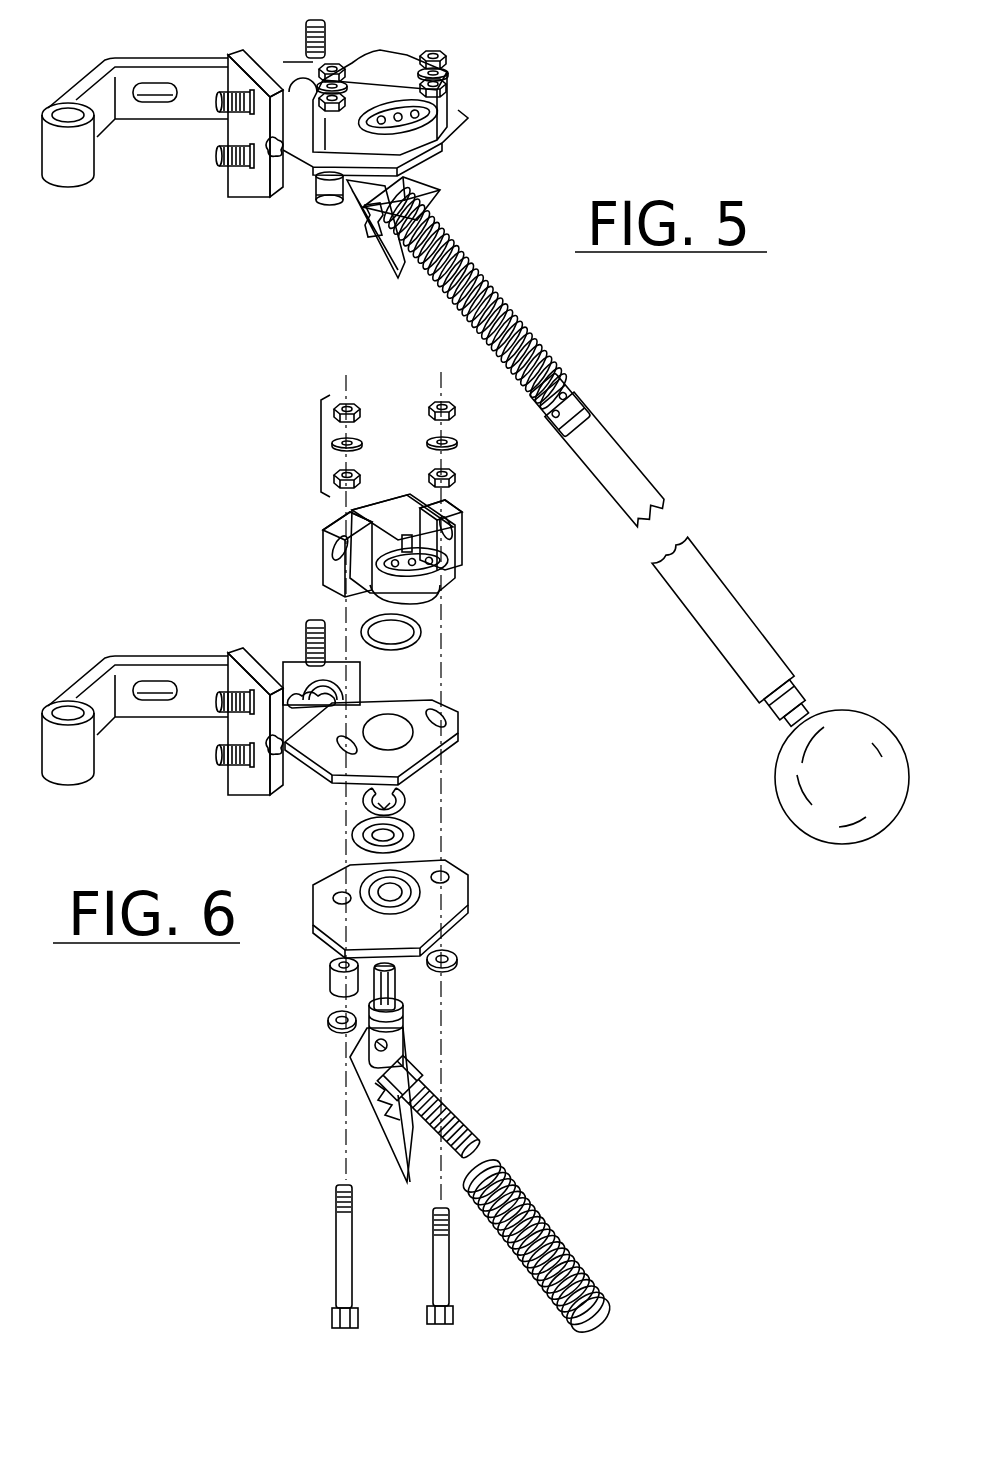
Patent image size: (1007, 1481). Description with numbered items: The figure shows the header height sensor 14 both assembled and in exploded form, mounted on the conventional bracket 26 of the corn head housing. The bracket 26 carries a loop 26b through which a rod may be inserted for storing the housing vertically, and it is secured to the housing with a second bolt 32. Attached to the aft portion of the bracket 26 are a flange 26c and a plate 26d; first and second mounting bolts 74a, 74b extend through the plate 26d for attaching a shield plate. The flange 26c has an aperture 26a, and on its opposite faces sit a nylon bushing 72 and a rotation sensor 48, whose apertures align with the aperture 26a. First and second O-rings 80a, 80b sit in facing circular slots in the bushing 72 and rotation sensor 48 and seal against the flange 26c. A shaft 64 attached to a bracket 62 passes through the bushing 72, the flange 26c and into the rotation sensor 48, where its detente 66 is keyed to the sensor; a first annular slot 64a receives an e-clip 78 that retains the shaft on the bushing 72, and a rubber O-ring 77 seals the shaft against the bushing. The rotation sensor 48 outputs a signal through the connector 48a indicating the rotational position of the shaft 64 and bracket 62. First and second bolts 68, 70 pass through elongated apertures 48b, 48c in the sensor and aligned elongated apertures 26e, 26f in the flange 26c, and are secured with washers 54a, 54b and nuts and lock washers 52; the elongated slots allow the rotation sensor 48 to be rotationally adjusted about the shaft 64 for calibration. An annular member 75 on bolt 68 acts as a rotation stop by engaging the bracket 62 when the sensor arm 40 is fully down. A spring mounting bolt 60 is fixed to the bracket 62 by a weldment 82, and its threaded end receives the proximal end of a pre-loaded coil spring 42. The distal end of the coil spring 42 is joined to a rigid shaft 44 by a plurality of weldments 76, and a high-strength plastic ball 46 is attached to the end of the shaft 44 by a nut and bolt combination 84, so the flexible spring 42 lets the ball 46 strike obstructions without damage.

In FIG. 5, the height sensor 14 is at (246, 282).
In FIG. 6, the height sensor 14 is at (143, 576).
In FIG. 5, the bracket 26 is at (103, 54).
In FIG. 6, the bracket 26 is at (138, 667).
In FIG. 6, the aperture 26a is at (397, 717).
In FIG. 5, the loop 26b is at (106, 128).
In FIG. 6, the loop 26b is at (68, 709).
In FIG. 5, the flange 26c is at (430, 150).
In FIG. 6, the flange 26c is at (433, 768).
In FIG. 5, the plate 26d is at (270, 190).
In FIG. 6, the plate 26d is at (224, 753).
In FIG. 6, the aperture 26e is at (333, 742).
In FIG. 6, the aperture 26f is at (440, 706).
In FIG. 5, the second bolt 32 is at (325, 37).
In FIG. 6, the second bolt 32 is at (313, 622).
In FIG. 5, the sensor arm 40 is at (719, 589).
In FIG. 5, the coil spring 42 is at (510, 280).
In FIG. 6, the coil spring 42 is at (530, 1213).
In FIG. 5, the rigid shaft 44 is at (630, 478).
In FIG. 5, the ball 46 is at (776, 772).
In FIG. 5, the rotation sensor 48 is at (446, 102).
In FIG. 6, the rotation sensor 48 is at (399, 519).
In FIG. 5, the connector 48a is at (437, 125).
In FIG. 6, the connector 48a is at (430, 574).
In FIG. 6, the aperture 48b is at (337, 527).
In FIG. 6, the aperture 48c is at (440, 513).
In FIG. 5, the nuts and lock washers 52 is at (300, 88).
In FIG. 6, the nuts and lock washers 52 is at (321, 447).
In FIG. 6, the washer 54a is at (328, 1018).
In FIG. 6, the washer 54b is at (457, 958).
In FIG. 5, the spring mounting bolt 60 is at (430, 182).
In FIG. 6, the spring mounting bolt 60 is at (450, 1118).
In FIG. 5, the bracket 62 is at (393, 260).
In FIG. 6, the bracket 62 is at (363, 1092).
In FIG. 6, the shaft 64 is at (395, 1037).
In FIG. 6, the first annular slot 64a is at (401, 1010).
In FIG. 6, the detente 66 is at (398, 988).
In FIG. 6, the first bolt 68 is at (343, 1278).
In FIG. 6, the second bolt 70 is at (440, 1285).
In FIG. 5, the nylon bushing 72 is at (352, 180).
In FIG. 6, the nylon bushing 72 is at (460, 874).
In FIG. 5, the first mounting bolt 74a is at (217, 105).
In FIG. 6, the first mounting bolt 74a is at (213, 657).
In FIG. 5, the second mounting bolt 74b is at (218, 160).
In FIG. 6, the second mounting bolt 74b is at (191, 771).
In FIG. 6, the annular member 75 is at (330, 980).
In FIG. 5, the weldments 76 is at (578, 383).
In FIG. 6, the rubber O-ring 77 is at (363, 838).
In FIG. 6, the e-clip 78 is at (407, 794).
In FIG. 6, the first O-ring 80a is at (414, 832).
In FIG. 6, the second O-ring 80b is at (421, 628).
In FIG. 5, the weldment 82 is at (380, 227).
In FIG. 6, the weldment 82 is at (383, 1117).
In FIG. 5, the nut and bolt combination 84 is at (808, 703).